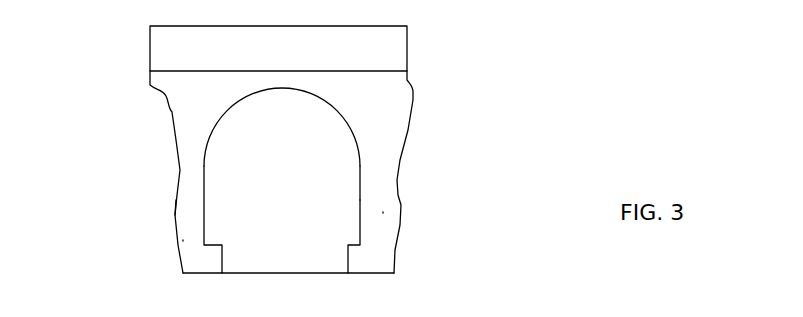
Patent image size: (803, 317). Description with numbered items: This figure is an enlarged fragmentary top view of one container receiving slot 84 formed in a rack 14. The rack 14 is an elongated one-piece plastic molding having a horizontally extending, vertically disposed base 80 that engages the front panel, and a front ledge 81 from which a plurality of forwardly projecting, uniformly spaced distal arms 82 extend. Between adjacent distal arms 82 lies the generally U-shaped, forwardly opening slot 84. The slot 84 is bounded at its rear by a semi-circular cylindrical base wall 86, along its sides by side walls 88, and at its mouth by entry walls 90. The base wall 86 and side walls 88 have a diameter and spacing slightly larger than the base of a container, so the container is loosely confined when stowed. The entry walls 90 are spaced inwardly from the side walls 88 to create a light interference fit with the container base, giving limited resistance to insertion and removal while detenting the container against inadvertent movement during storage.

The rack 14 is at (148, 85).
The base 80 is at (407, 38).
The base wall 86 is at (342, 117).
The container receiving slot 84 is at (360, 170).
The side wall 88 is at (204, 190).
The entry wall 90 is at (203, 260).
The distal arm 82 is at (183, 240).
The front ledge 81 is at (173, 220).